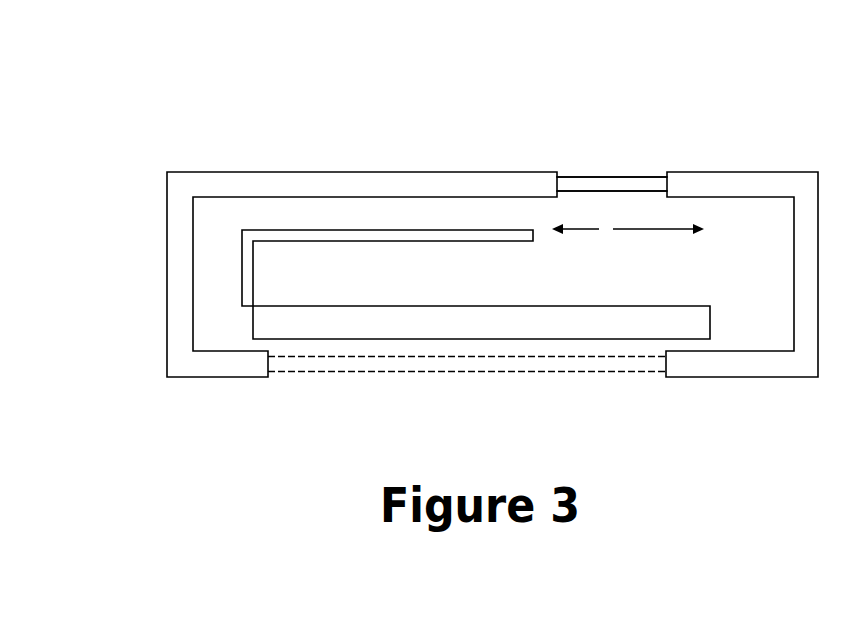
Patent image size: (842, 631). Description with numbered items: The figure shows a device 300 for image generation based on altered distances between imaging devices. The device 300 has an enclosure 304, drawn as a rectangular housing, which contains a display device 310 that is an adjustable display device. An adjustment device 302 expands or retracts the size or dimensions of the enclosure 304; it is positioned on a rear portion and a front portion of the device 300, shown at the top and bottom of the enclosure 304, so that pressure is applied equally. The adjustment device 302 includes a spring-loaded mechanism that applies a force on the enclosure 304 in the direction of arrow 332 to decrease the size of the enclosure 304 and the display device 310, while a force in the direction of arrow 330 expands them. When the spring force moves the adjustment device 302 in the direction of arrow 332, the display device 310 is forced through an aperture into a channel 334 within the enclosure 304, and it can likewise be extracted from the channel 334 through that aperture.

The device 300 is at (668, 63).
The adjustment device 302 is at (630, 172).
The enclosure 304 is at (167, 172).
The display device 310 is at (422, 326).
The arrow 330 is at (673, 229).
The arrow 332 is at (588, 229).
The channel 334 is at (222, 268).